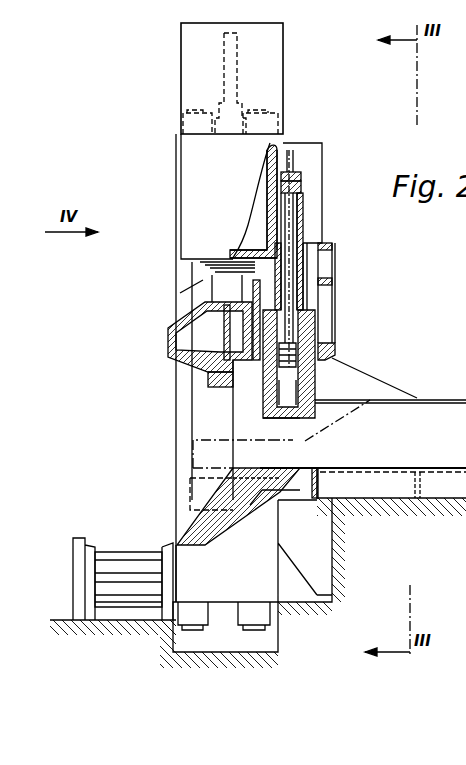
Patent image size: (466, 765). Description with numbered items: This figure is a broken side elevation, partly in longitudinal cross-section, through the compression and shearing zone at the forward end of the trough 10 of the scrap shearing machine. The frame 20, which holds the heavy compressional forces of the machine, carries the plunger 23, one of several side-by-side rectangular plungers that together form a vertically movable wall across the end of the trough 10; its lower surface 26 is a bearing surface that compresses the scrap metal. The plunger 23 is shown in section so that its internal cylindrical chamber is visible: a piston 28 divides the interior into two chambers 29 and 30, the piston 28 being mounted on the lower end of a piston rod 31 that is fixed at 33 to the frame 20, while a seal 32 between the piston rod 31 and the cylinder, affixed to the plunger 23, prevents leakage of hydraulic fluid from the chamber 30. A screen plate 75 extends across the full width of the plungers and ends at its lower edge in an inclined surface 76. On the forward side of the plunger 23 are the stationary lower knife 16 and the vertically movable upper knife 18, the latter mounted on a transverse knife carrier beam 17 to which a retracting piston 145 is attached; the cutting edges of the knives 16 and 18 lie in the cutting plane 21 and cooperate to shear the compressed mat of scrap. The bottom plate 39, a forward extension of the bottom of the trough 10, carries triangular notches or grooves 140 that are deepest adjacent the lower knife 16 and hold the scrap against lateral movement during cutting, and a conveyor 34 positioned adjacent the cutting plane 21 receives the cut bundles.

The trough 10 is at (441, 412).
The stationary lower knife 16 is at (233, 478).
The knife carrier beam 17 is at (178, 326).
The upper knife 18 is at (210, 385).
The frame 20 is at (190, 238).
The cutting plane 21 is at (232, 420).
The plunger 23 is at (310, 325).
The lower surface of plunger 26 is at (298, 441).
The piston 28 is at (292, 360).
The chamber 29 is at (290, 396).
The chamber 30 is at (310, 285).
The piston rod 31 is at (297, 205).
The seal 32 is at (305, 240).
The fixing point of piston rod 33 is at (300, 190).
The conveyor 34 is at (128, 565).
The bottom plate 39 is at (275, 465).
The screen plate 75 is at (332, 295).
The inclined surface 76 is at (340, 357).
The notches or grooves 140 is at (195, 462).
The piston 145 is at (238, 60).